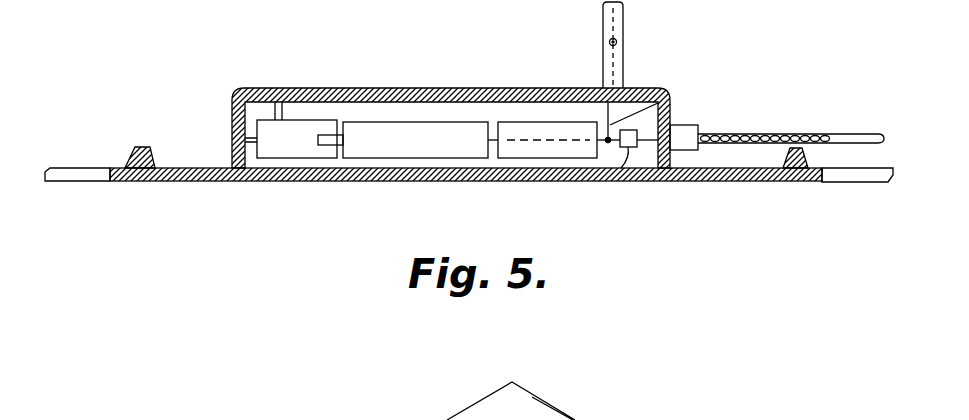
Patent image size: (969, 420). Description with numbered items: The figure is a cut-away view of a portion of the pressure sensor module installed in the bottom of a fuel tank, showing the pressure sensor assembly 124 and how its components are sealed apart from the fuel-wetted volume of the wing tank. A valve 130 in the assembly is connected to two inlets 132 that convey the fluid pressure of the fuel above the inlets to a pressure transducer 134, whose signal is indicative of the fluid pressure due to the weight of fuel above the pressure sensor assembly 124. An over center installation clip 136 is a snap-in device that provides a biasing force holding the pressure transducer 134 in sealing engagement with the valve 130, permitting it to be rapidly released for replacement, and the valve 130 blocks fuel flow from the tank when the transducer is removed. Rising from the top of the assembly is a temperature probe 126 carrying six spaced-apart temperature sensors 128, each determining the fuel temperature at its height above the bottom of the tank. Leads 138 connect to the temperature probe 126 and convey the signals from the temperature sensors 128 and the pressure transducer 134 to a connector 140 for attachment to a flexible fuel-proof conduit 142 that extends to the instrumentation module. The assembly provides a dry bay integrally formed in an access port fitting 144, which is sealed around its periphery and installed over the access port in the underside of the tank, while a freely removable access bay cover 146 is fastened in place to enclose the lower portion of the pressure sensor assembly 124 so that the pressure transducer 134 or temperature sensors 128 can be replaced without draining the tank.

The pressure sensor assembly 124 is at (462, 88).
The temperature probe 126 is at (623, 20).
The temperature sensor 128 is at (620, 42).
The valve 130 is at (295, 152).
The inlets 132 is at (283, 113).
The pressure transducer 134 is at (415, 148).
The over center installation clip 136 is at (522, 155).
The leads 138 is at (663, 102).
The connector 140 is at (627, 182).
The flexible fuel-proof conduit 142 is at (743, 135).
The access port fitting 144 is at (720, 181).
The access bay cover 146 is at (548, 180).